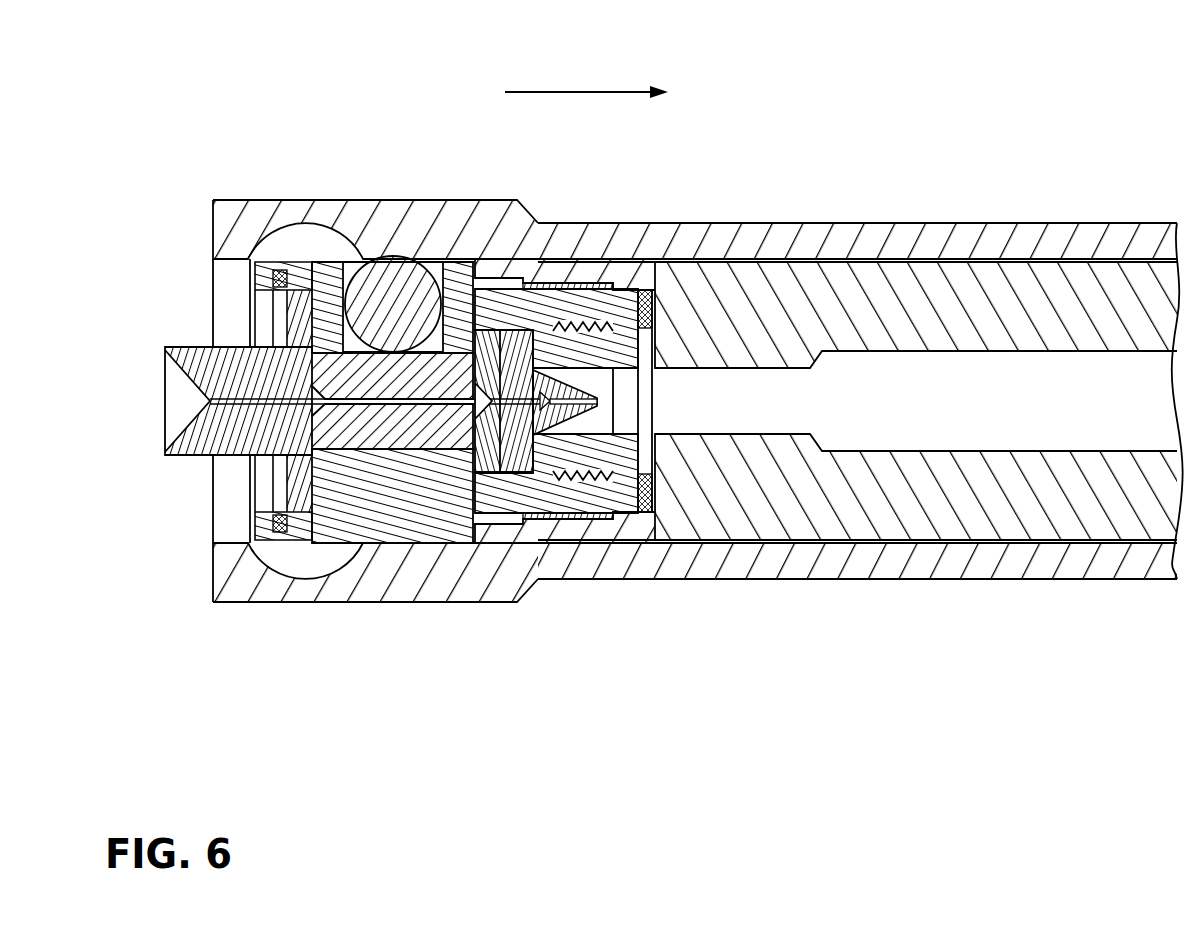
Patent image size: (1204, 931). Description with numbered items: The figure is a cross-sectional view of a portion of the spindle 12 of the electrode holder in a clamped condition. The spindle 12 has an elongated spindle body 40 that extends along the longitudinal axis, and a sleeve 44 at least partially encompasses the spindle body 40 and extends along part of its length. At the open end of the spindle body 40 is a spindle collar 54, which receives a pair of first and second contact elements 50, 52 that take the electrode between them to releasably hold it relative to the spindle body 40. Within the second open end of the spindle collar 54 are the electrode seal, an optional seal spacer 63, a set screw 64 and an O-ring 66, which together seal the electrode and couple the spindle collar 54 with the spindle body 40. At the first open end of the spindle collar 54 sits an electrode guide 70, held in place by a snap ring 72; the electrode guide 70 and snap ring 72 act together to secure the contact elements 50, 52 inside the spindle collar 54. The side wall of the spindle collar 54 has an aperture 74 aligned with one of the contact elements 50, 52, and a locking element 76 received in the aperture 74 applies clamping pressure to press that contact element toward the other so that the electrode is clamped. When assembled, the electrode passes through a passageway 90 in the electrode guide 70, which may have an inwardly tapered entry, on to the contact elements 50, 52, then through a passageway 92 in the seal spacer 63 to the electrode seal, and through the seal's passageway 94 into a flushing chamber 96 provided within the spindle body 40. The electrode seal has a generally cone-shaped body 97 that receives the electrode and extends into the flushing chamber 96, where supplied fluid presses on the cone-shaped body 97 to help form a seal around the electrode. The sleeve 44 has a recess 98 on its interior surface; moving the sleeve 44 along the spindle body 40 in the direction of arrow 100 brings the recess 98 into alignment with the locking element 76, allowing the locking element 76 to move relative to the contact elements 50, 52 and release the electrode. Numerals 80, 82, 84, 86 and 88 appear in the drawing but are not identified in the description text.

The spindle 12 is at (752, 168).
The spindle body 40 is at (910, 278).
The sleeve 44 is at (790, 224).
The first contact element 50 is at (362, 560).
The second contact element 52 is at (455, 360).
The spindle collar 54 is at (395, 512).
The seal spacer 63 is at (522, 476).
The set screw 64 is at (645, 514).
The O-ring 66 is at (646, 292).
The electrode guide 70 is at (205, 458).
The snap ring 72 is at (266, 222).
The aperture 74 is at (447, 345).
The locking element 76 is at (398, 262).
The poppet 80 is at (488, 476).
The valve member 82 is at (432, 470).
The seal ring 84 is at (292, 540).
The ball seat 86 is at (398, 290).
The retaining nut 88 is at (278, 262).
The passageway 90 is at (210, 388).
The passageway 92 is at (574, 482).
The passageway 94 is at (598, 300).
The flushing chamber 96 is at (737, 405).
The cone-shaped body 97 is at (658, 544).
The recess 98 is at (330, 262).
The arrow 100 is at (568, 82).